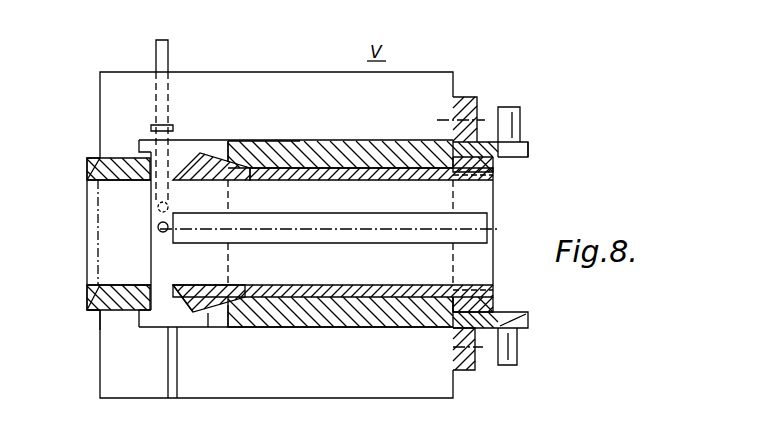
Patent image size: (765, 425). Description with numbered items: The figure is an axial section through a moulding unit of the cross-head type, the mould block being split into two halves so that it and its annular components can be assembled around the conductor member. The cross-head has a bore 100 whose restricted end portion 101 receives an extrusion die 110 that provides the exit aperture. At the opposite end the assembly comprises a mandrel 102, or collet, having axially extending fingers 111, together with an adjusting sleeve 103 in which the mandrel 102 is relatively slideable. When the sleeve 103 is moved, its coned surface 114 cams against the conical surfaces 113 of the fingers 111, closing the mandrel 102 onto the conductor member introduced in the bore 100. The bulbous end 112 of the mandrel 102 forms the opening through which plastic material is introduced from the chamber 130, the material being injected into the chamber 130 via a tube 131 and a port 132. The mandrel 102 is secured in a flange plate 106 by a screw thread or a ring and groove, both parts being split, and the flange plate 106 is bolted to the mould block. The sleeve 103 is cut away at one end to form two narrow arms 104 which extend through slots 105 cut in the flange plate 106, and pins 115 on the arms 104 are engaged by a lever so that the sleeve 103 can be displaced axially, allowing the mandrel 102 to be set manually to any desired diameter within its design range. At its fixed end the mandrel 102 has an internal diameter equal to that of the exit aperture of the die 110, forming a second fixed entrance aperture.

The bore 100 is at (197, 140).
The restricted end portion 101 is at (107, 310).
The mandrel 102 is at (275, 183).
The adjusting sleeve 103 is at (380, 150).
The narrow arms 104 is at (513, 312).
The slots 105 is at (485, 172).
The flange plate 106 is at (473, 370).
The extrusion die 110 is at (87, 170).
The fingers 111 is at (215, 171).
The bulbous end 112 is at (193, 312).
The conical surfaces 113 is at (208, 318).
The coned surface 114 is at (256, 133).
The pins 115 is at (518, 347).
The chamber 130 is at (217, 327).
The tube 131 is at (168, 52).
The port 132 is at (157, 210).